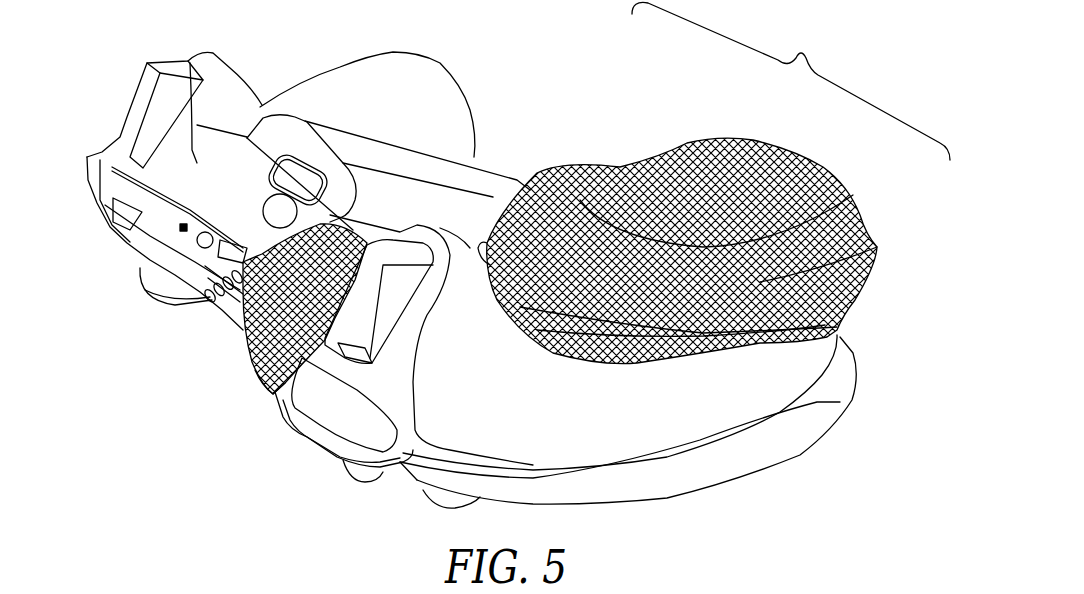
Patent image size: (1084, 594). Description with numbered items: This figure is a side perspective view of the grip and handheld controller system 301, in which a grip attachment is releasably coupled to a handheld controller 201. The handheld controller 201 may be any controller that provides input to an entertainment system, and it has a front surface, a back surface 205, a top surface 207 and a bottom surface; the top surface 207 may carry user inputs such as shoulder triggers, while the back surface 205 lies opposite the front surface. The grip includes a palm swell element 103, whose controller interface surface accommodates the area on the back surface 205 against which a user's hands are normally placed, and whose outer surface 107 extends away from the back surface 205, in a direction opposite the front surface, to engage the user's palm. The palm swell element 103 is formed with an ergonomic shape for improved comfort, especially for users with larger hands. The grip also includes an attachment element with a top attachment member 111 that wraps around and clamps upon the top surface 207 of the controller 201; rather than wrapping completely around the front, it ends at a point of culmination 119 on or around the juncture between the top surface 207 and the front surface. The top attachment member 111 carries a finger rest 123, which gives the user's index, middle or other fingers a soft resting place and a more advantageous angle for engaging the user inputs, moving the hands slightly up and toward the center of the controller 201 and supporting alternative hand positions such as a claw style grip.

The grip and handheld controller system 301 is at (791, 81).
The handheld controller 201 is at (115, 103).
The top surface 207 is at (240, 262).
The finger rest 123 is at (240, 338).
The point of culmination 119 is at (264, 376).
The top attachment member 111 is at (195, 377).
The back surface 205 is at (505, 163).
The outer surface 107 is at (757, 133).
The palm swell element 103 is at (617, 167).